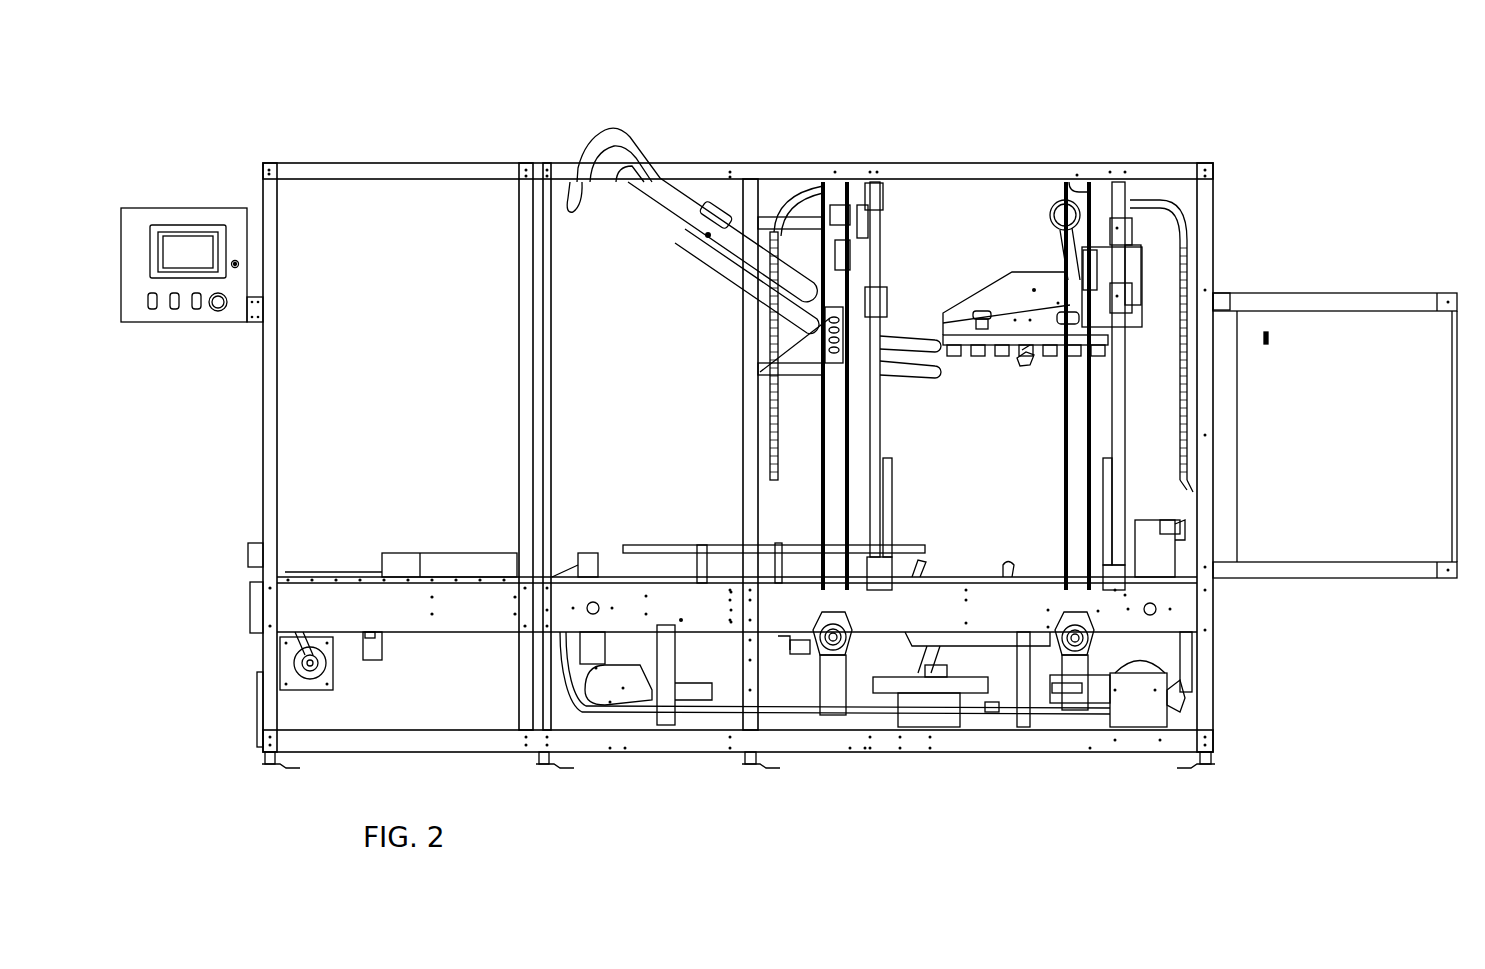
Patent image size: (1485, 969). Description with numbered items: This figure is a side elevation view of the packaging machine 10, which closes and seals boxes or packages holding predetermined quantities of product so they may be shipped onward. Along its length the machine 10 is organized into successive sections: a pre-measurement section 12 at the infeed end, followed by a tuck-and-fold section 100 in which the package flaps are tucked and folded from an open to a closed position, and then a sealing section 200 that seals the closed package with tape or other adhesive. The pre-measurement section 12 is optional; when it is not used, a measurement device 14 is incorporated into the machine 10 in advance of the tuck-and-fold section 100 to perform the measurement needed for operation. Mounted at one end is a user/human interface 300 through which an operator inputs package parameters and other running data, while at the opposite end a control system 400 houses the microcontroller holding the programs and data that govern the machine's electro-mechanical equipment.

The packaging machine 10 is at (1272, 135).
The pre-measurement section 12 is at (385, 160).
The measurement device 14 is at (507, 155).
The tuck-and-fold section 100 is at (747, 157).
The sealing section 200 is at (992, 160).
The user/human interface 300 is at (158, 323).
The control system 400 is at (1340, 355).